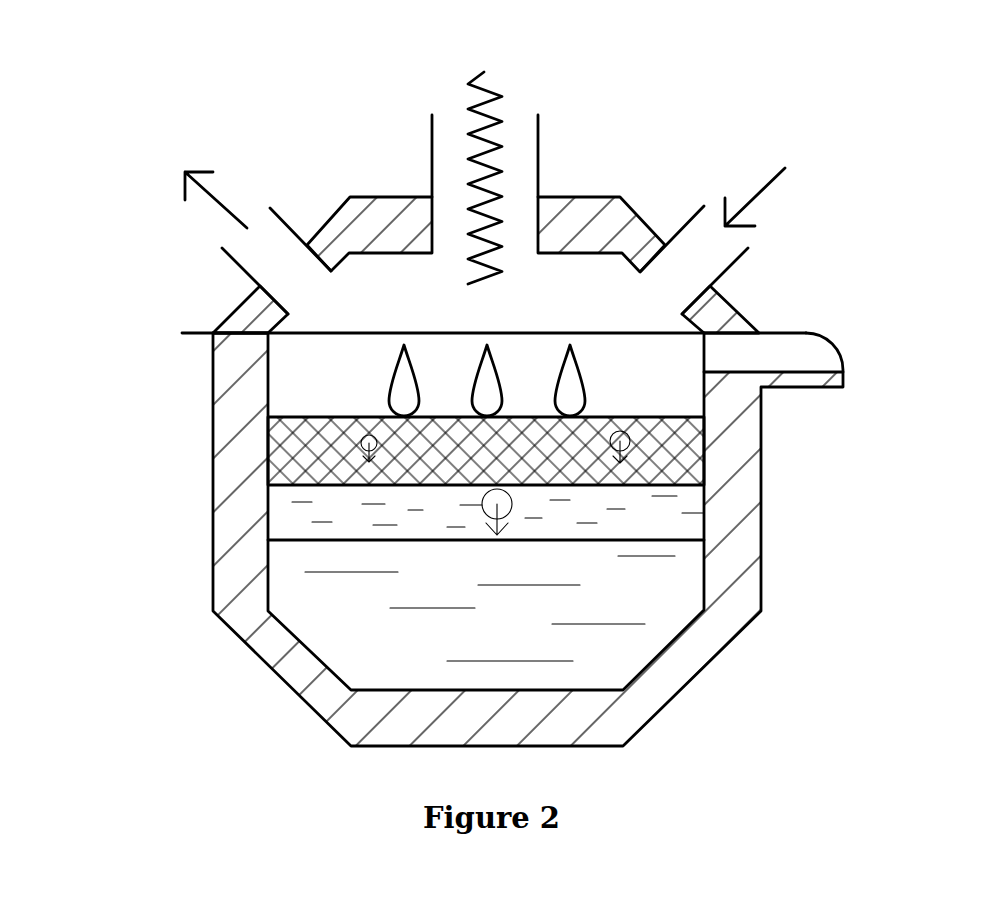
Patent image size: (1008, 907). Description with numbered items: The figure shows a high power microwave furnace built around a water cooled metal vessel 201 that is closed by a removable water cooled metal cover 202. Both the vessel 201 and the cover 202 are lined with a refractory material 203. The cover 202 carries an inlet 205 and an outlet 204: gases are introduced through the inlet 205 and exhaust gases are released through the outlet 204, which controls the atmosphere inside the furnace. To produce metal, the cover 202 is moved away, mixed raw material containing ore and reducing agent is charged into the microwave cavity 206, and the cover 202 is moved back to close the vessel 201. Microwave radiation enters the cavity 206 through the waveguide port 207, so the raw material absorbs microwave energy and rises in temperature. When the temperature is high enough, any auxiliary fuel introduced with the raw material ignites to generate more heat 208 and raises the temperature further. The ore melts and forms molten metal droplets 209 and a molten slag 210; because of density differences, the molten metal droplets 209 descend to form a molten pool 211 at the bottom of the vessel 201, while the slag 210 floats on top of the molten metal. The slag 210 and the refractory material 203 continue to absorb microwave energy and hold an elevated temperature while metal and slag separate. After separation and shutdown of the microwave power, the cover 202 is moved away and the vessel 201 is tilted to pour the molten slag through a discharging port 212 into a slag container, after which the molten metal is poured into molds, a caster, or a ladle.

The water cooled metal vessel 201 is at (212, 556).
The removable water cooled metal cover 202 is at (580, 197).
The refractory material 203 is at (238, 465).
The outlet 204 is at (273, 250).
The inlet 205 is at (695, 258).
The microwave cavity 206 is at (487, 317).
The waveguide port 207 is at (517, 126).
The heat 208 is at (487, 402).
The molten metal droplets 209 is at (623, 431).
The molten slag 210 is at (633, 523).
The molten pool 211 is at (607, 652).
The discharging port 212 is at (772, 357).